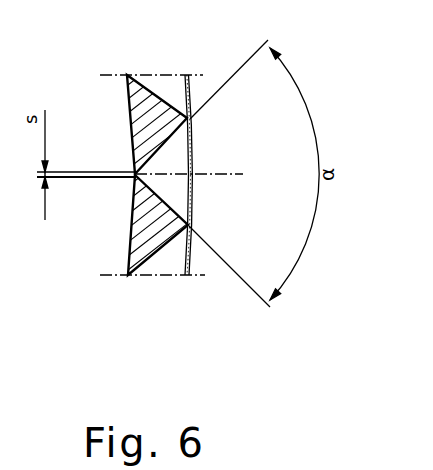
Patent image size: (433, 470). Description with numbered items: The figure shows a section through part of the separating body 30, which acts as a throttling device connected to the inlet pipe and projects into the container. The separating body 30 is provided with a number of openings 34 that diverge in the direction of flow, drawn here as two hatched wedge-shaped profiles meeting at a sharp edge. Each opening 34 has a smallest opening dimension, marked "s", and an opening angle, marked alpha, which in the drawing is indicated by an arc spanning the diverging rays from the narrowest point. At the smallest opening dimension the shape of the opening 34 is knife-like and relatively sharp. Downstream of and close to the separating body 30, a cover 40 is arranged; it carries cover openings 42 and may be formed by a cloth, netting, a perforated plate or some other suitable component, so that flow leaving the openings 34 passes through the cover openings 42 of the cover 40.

The separating body 30 is at (147, 125).
The opening 34 is at (162, 203).
The cover 40 is at (192, 140).
The cover opening 42 is at (193, 152).